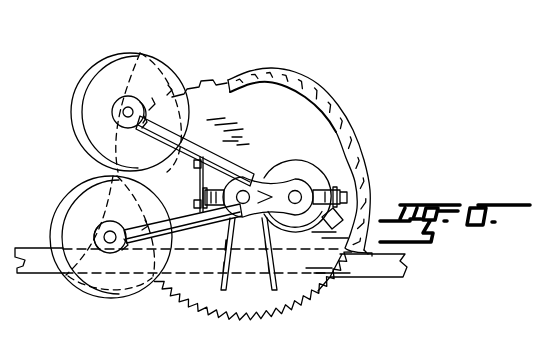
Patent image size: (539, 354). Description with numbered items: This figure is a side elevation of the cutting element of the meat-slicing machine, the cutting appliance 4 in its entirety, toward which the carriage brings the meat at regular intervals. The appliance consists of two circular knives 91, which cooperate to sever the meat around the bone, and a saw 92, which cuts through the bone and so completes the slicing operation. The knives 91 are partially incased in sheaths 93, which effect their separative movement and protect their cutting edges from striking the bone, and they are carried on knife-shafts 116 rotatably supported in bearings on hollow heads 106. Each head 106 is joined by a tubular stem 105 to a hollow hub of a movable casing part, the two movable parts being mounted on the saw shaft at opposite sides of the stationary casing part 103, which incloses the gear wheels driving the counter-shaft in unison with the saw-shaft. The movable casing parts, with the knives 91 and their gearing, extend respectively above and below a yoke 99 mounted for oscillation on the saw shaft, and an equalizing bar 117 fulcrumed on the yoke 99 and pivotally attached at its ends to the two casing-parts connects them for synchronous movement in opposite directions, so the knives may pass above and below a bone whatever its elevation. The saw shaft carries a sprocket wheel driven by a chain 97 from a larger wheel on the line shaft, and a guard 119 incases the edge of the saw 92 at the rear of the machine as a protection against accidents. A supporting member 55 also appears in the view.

The cutting appliance 4 is at (236, 78).
The support 55 is at (0, 108).
The circular knives 91 is at (77, 81).
The saw 92 is at (315, 137).
The sheaths 93 is at (182, 72).
The chain 97 is at (212, 264).
The yoke 99 is at (347, 196).
The stationary part of casing 103 is at (330, 160).
The tubular stem 105 is at (238, 148).
The hollow head 106 is at (138, 98).
The knife-shafts 116 is at (123, 112).
The equalizing bar 117 is at (199, 179).
The guard 119 is at (323, 100).